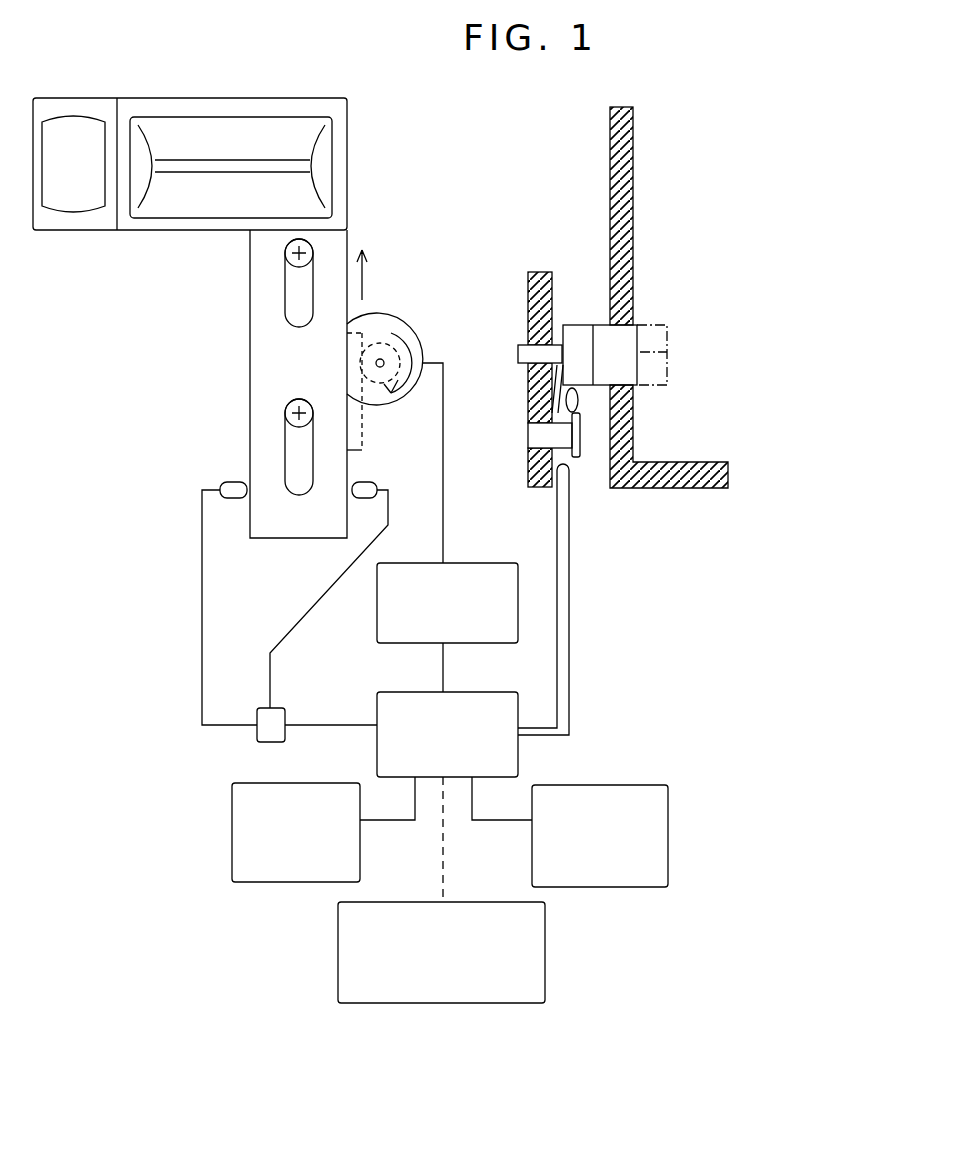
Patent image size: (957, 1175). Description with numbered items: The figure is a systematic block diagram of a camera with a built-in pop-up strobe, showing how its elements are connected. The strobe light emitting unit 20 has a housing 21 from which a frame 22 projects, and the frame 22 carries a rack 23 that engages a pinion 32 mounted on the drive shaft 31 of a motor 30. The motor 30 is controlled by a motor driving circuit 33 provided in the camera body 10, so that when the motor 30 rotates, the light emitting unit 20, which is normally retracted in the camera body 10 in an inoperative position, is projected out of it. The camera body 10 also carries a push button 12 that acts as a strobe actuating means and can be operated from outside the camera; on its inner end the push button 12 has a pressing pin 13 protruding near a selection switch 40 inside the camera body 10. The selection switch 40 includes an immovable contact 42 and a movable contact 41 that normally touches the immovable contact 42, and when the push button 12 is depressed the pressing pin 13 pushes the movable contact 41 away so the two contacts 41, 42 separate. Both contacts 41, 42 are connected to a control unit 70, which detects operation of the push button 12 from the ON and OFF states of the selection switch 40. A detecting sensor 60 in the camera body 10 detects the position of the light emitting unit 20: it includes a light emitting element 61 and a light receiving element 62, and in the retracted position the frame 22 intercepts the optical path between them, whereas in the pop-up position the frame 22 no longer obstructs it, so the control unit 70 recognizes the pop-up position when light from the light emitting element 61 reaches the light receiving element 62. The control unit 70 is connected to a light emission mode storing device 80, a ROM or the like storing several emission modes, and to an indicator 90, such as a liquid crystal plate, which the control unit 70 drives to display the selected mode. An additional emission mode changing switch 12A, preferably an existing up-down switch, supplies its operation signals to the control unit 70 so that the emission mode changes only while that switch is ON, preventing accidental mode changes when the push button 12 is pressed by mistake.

The camera body 10 is at (639, 174).
The push button 12 is at (656, 336).
The emission mode changing switch 12A is at (545, 950).
The pressing pin 13 is at (580, 330).
The strobe light emitting unit 20 is at (206, 188).
The housing 21 is at (347, 183).
The frame 22 is at (250, 342).
The rack 23 is at (363, 430).
The motor 30 is at (400, 315).
The drive shaft 31 is at (382, 360).
The pinion 32 is at (397, 345).
The motor driving circuit 33 is at (377, 598).
The selection switch 40 is at (577, 482).
The movable contact 41 is at (548, 400).
The immovable contact 42 is at (565, 390).
The detecting sensor 60 is at (257, 735).
The light emitting element 61 is at (232, 500).
The light receiving element 62 is at (362, 502).
The control unit 70 is at (377, 712).
The light emission mode storing device 80 is at (232, 825).
The indicator 90 is at (600, 785).